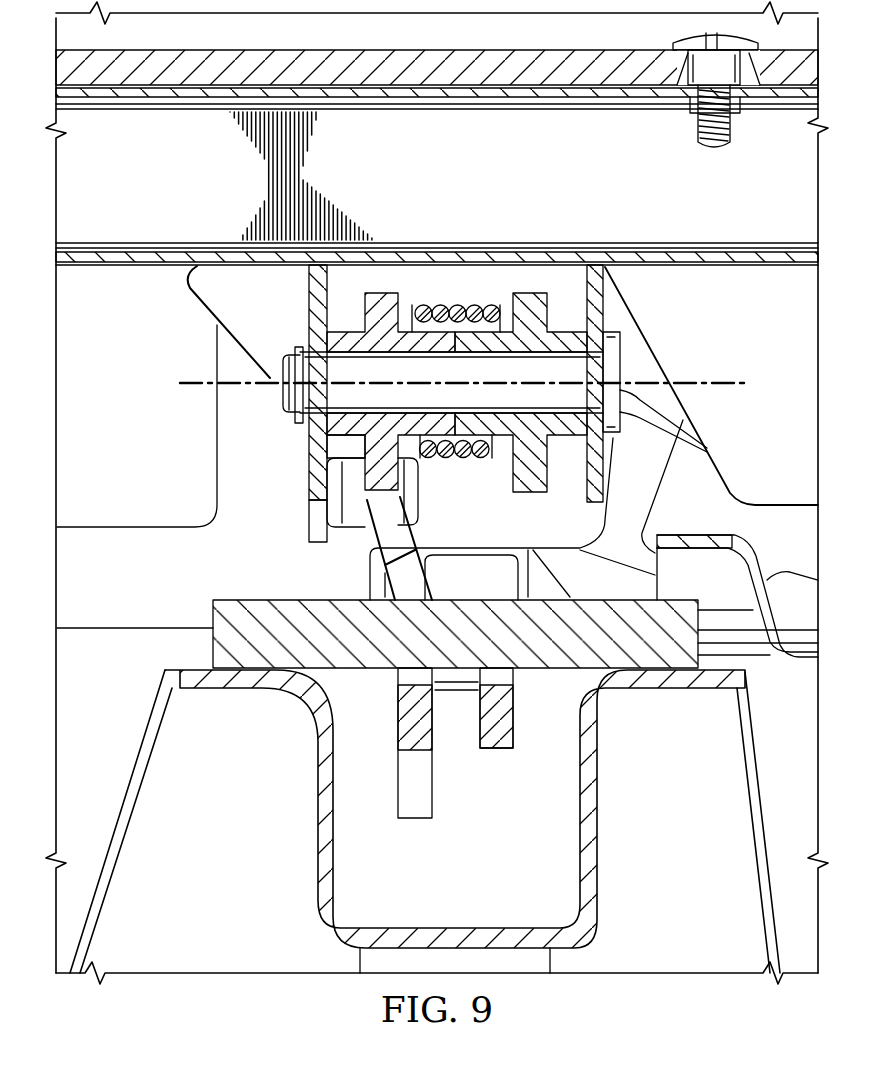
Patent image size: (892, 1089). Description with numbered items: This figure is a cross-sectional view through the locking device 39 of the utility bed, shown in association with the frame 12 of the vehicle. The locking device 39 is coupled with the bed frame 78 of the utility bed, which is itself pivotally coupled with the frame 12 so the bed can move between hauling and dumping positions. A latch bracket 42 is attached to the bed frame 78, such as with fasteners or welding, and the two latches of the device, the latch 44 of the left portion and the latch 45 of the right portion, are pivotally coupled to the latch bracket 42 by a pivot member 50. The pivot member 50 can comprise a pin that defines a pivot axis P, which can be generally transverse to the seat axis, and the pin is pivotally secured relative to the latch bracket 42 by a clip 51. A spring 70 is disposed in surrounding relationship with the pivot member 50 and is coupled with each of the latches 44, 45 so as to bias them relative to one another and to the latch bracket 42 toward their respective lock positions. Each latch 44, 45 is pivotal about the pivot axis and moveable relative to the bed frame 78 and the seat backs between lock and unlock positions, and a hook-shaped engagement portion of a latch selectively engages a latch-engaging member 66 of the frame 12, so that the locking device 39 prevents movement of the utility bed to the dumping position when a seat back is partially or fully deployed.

The frame 12 is at (123, 782).
The locking device 39 is at (145, 570).
The latch bracket 42 is at (307, 300).
The latch 44 is at (498, 760).
The latch 45 is at (412, 826).
The pivot member 50 is at (632, 348).
The clip 51 is at (300, 425).
The latch-engaging member 66 is at (213, 643).
The spring 70 is at (433, 293).
The bed frame 78 is at (147, 266).